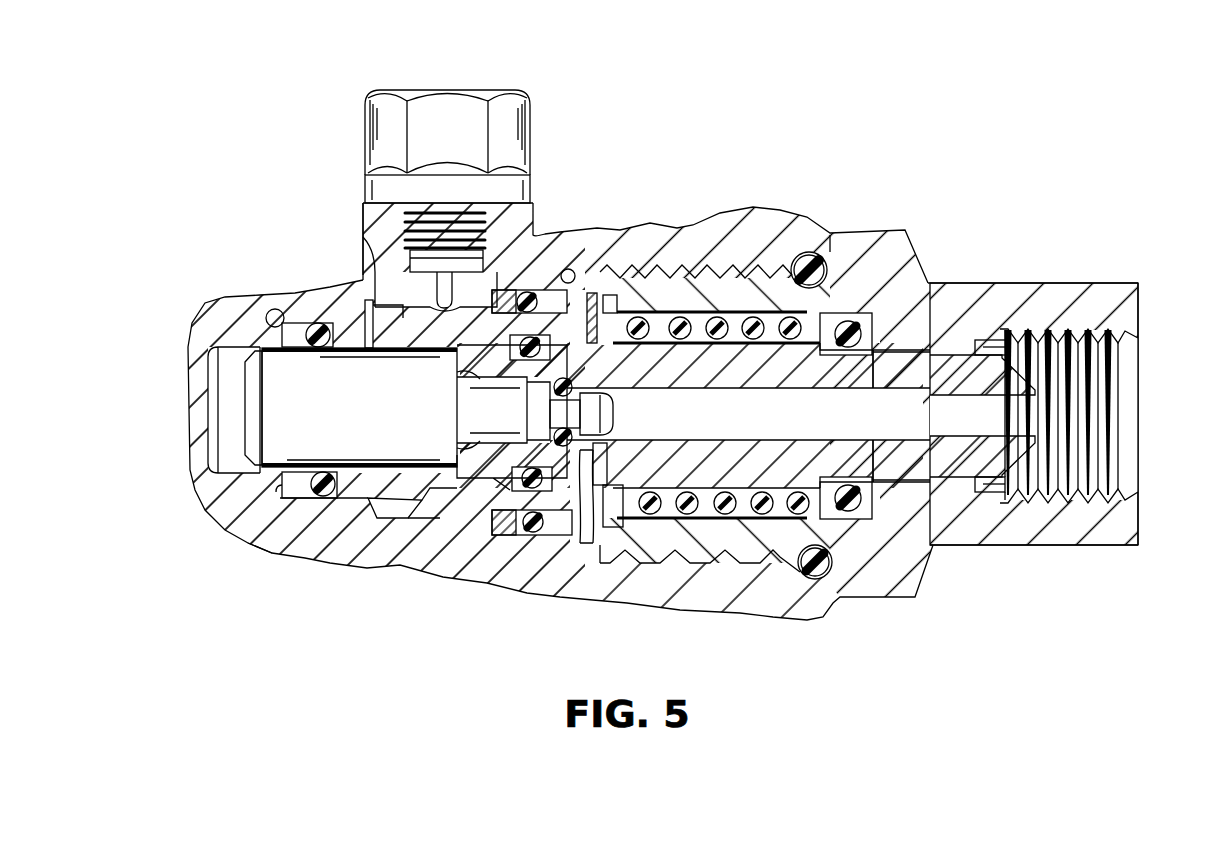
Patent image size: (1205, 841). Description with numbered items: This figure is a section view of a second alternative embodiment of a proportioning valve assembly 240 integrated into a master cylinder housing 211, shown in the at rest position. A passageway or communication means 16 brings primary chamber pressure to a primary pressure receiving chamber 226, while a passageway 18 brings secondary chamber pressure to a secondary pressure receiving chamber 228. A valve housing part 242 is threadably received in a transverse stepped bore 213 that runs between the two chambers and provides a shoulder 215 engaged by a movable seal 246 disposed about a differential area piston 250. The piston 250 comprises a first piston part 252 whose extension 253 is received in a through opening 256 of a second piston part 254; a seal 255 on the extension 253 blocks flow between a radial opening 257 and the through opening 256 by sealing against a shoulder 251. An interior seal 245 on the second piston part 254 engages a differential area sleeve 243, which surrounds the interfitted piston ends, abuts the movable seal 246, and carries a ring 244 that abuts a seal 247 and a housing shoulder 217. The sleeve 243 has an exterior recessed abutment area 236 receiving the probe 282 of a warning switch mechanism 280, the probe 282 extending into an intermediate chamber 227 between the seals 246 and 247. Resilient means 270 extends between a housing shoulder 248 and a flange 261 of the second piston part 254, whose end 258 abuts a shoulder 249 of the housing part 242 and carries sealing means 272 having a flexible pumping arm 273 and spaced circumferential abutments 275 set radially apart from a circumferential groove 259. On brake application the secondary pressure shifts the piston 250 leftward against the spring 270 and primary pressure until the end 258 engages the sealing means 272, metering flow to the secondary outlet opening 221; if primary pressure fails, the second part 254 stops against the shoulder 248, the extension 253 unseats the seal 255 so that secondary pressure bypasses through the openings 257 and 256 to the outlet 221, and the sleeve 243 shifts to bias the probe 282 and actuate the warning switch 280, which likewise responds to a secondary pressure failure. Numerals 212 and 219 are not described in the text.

The passageway or communication means 16 is at (268, 312).
The passageway or communication means 18 is at (576, 273).
The master cylinder housing 211 is at (750, 597).
The housing boss 212 is at (538, 213).
The transverse bore 213 is at (297, 322).
The shoulder 215 is at (285, 488).
The housing shoulder 217 is at (487, 293).
The passage 219 is at (350, 313).
The secondary outlet opening 221 is at (1127, 407).
The primary pressure receiving chamber 226 is at (227, 435).
The intermediate chamber 227 is at (362, 247).
The secondary pressure receiving chamber 228 is at (623, 592).
The exterior recessed abutment area 236 is at (442, 522).
The proportioning valve assembly 240 is at (800, 158).
The valve housing part 242 is at (930, 282).
The differential area sleeve 243 is at (357, 500).
The ring 244 is at (503, 537).
The interior seal 245 is at (477, 508).
The movable seal 246 is at (300, 520).
The seal 247 is at (527, 292).
The housing shoulder 248 is at (640, 310).
The shoulder 249 is at (990, 300).
The differential area piston 250 is at (233, 392).
The shoulder 251 is at (625, 435).
The first piston part 252 is at (351, 407).
The extension 253 is at (503, 410).
The second piston part 254 is at (770, 450).
The seal 255 is at (618, 395).
The through opening 256 is at (748, 415).
The radial opening 257 is at (585, 545).
The end 258 is at (913, 377).
The circumferential groove 259 is at (863, 472).
The flange 261 is at (835, 318).
The resilient means 270 is at (717, 307).
The sealing means 272 is at (860, 583).
The flexible pumping arm 273 is at (907, 233).
The circumferential abutments 275 is at (940, 545).
The warning switch mechanism 280 is at (530, 138).
The probe 282 is at (437, 291).